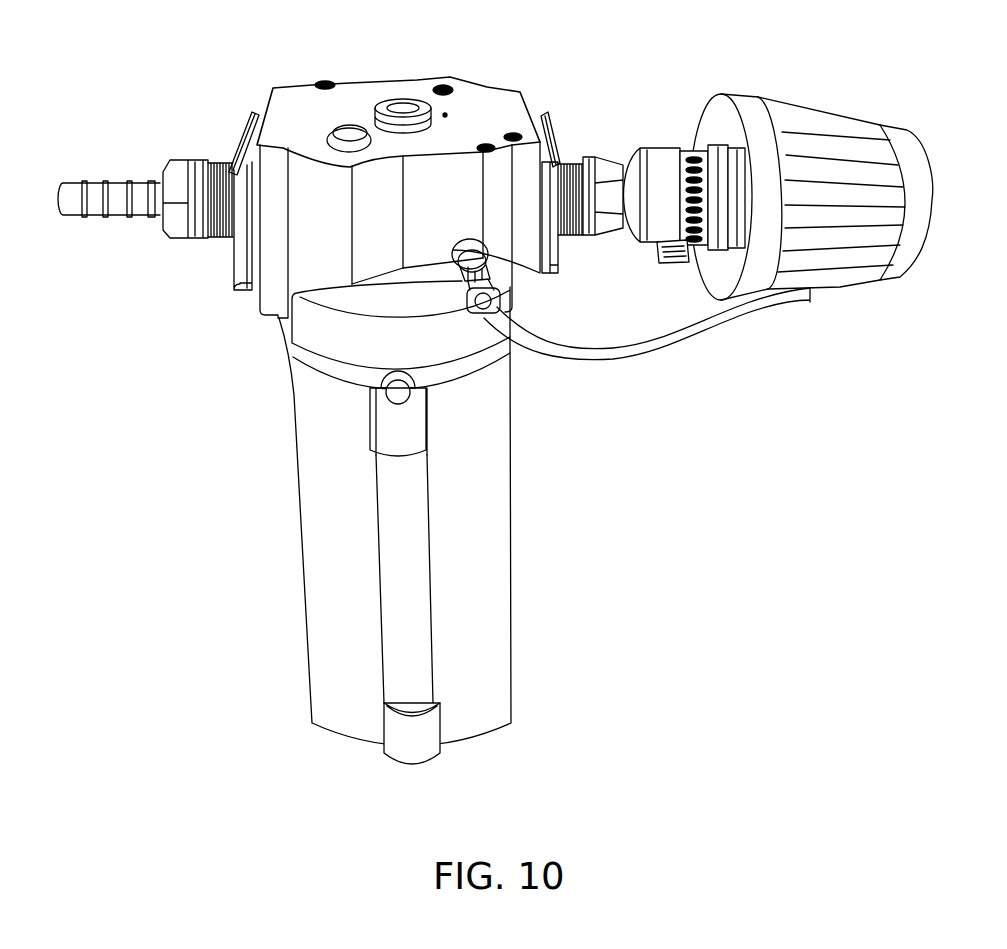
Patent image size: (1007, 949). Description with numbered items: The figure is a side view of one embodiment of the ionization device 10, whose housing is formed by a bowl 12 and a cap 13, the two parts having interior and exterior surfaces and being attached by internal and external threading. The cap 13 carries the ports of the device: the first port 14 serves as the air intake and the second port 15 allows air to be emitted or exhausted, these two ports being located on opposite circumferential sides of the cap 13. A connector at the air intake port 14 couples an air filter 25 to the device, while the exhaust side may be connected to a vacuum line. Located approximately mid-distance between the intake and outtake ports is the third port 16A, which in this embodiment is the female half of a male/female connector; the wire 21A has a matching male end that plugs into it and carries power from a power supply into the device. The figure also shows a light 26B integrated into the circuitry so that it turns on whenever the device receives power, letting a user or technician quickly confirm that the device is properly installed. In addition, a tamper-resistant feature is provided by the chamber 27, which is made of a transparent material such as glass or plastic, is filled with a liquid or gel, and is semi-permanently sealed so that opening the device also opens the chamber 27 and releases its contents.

The ionization device 10 is at (495, 392).
The bowl 12 is at (503, 598).
The cap 13 is at (475, 105).
The first port 14 is at (562, 160).
The second port 15 is at (233, 240).
The third port 16A is at (556, 275).
The wire 21A is at (515, 305).
The air filter 25 is at (820, 120).
The light 26B is at (355, 126).
The chamber 27 is at (387, 543).